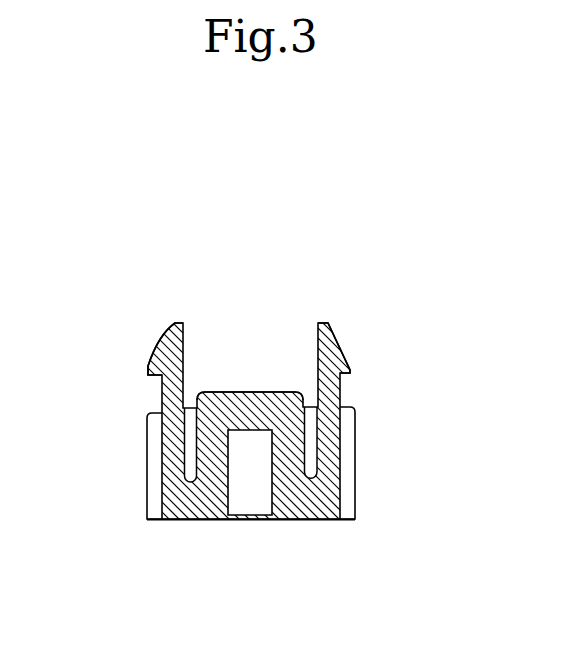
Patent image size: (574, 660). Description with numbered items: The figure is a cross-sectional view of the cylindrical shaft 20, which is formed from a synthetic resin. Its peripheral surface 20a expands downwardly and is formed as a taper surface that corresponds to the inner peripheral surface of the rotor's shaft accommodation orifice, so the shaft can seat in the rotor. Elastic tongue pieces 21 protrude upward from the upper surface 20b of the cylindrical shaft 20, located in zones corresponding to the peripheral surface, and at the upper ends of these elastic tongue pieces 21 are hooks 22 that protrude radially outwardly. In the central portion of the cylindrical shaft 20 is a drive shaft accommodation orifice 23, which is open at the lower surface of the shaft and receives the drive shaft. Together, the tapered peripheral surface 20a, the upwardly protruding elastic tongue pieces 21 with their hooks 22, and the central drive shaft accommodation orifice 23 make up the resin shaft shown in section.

The cylindrical shaft 20 is at (167, 319).
The peripheral surface 20a is at (148, 485).
The upper surface 20b is at (303, 391).
The elastic tongue pieces 21 is at (162, 398).
The hooks 22 is at (152, 368).
The drive shaft accommodation orifice 23 is at (246, 483).